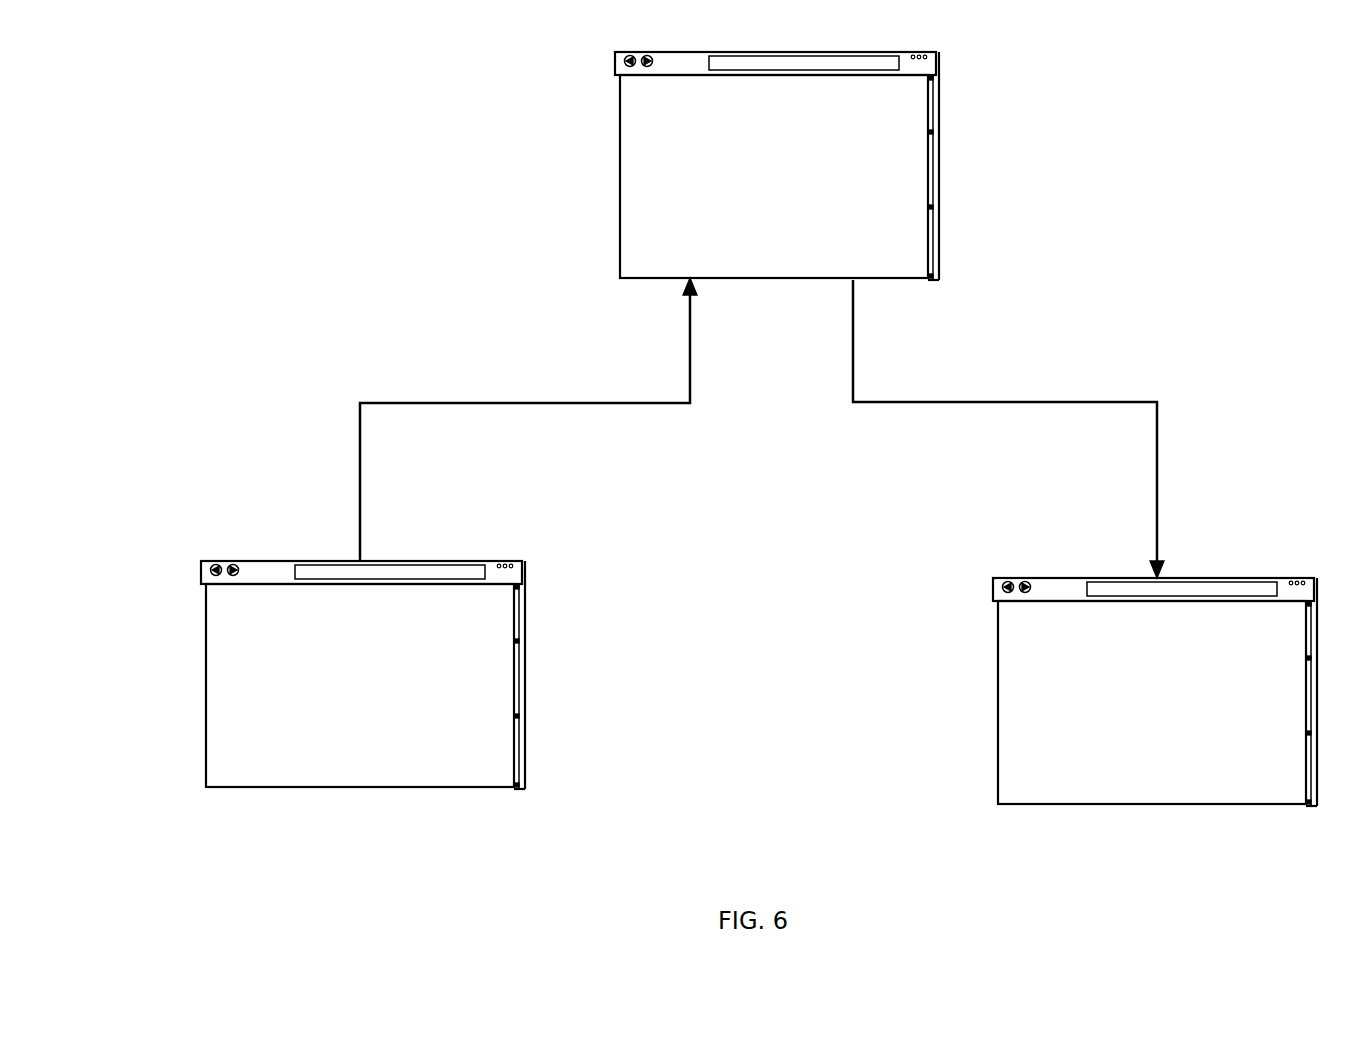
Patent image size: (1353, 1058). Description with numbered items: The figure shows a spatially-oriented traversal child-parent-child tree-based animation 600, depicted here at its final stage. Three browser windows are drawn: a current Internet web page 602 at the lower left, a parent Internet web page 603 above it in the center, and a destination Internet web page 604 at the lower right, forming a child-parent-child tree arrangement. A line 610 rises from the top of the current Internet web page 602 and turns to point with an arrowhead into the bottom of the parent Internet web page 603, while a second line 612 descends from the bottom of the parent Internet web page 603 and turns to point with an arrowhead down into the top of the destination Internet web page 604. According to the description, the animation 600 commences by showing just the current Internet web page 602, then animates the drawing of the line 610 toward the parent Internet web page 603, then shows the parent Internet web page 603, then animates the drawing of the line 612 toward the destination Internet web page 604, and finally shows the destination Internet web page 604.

The animation 600 is at (160, 92).
The current Internet web page 602 is at (525, 722).
The parent Internet web page 603 is at (940, 193).
The destination Internet web page 604 is at (997, 722).
The line 610 is at (428, 401).
The line 612 is at (1099, 401).